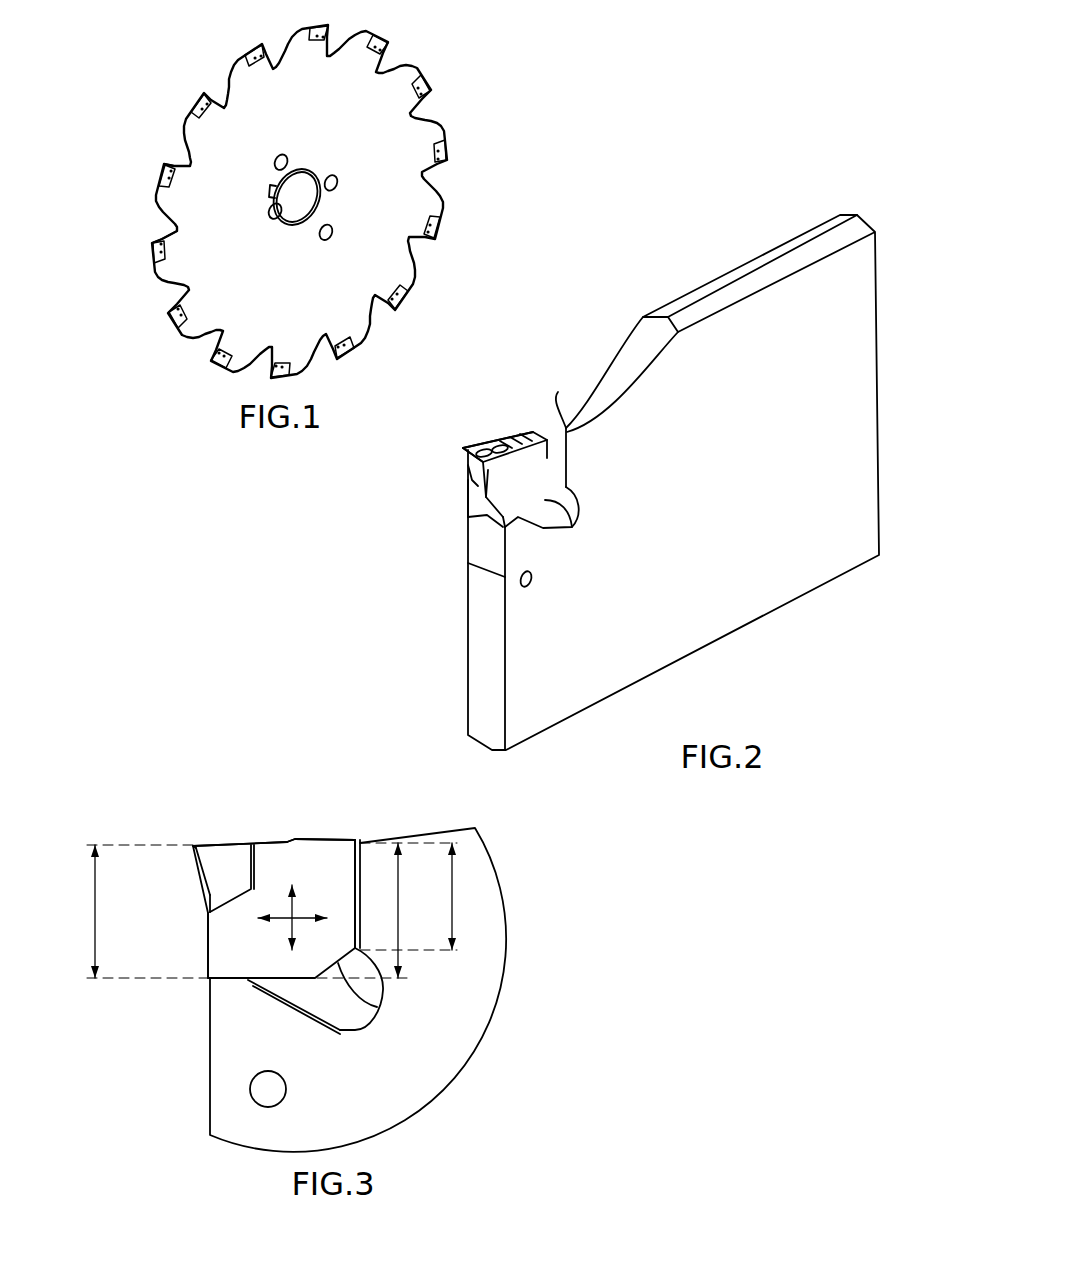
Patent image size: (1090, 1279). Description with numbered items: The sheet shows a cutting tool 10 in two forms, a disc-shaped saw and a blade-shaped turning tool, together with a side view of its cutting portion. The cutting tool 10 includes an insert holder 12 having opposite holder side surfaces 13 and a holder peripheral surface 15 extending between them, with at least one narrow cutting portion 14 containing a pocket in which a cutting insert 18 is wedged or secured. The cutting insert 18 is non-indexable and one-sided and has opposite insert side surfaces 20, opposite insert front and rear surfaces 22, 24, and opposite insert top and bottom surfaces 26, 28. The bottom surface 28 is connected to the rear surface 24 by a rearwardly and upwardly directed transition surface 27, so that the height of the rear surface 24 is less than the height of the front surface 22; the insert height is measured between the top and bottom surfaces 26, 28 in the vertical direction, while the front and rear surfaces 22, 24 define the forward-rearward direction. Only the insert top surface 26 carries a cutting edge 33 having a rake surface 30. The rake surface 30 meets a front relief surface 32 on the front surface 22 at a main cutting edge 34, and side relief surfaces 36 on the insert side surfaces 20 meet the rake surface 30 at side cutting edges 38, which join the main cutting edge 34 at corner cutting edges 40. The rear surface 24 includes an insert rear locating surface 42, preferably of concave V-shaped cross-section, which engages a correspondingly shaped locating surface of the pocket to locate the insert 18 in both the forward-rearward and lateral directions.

In FIG. 1, the cutting tool 10 is at (244, 200).
In FIG. 2, the cutting tool 10 is at (598, 476).
In FIG. 1, the insert holder 12 is at (212, 143).
In FIG. 2, the insert holder 12 is at (720, 360).
In FIG. 1, the holder side surfaces 13 is at (195, 205).
In FIG. 2, the holder side surfaces 13 is at (520, 680).
In FIG. 1, the narrow cutting portion 14 is at (147, 165).
In FIG. 3, the narrow cutting portion 14 is at (298, 898).
In FIG. 1, the holder peripheral surface 15 is at (158, 195).
In FIG. 2, the holder peripheral surface 15 is at (490, 637).
In FIG. 3, the holder peripheral surface 15 is at (210, 1068).
In FIG. 3, the cutting insert 18 is at (288, 825).
In FIG. 3, the insert side surfaces 20 is at (275, 853).
In FIG. 2, the insert front surface 22 is at (432, 492).
In FIG. 3, the insert front surface 22 is at (207, 927).
In FIG. 2, the insert rear surface 24 is at (567, 413).
In FIG. 3, the insert rear surface 24 is at (365, 887).
In FIG. 2, the insert top surface 26 is at (515, 428).
In FIG. 3, the insert top surface 26 is at (250, 840).
In FIG. 3, the transition surface 27 is at (380, 1012).
In FIG. 3, the insert bottom surface 28 is at (260, 987).
In FIG. 2, the rake surface 30 is at (473, 433).
In FIG. 2, the front relief surface 32 is at (467, 502).
In FIG. 3, the front relief surface 32 is at (193, 863).
In FIG. 2, the cutting edge 33 is at (458, 449).
In FIG. 2, the main cutting edge 34 is at (478, 477).
In FIG. 3, the main cutting edge 34 is at (190, 847).
In FIG. 2, the side relief surfaces 36 is at (500, 540).
In FIG. 3, the side relief surfaces 36 is at (228, 872).
In FIG. 2, the side cutting edges 38 is at (463, 447).
In FIG. 3, the side cutting edges 38 is at (200, 842).
In FIG. 2, the corner cutting edges 40 is at (487, 520).
In FIG. 2, the insert rear locating surface 42 is at (558, 387).